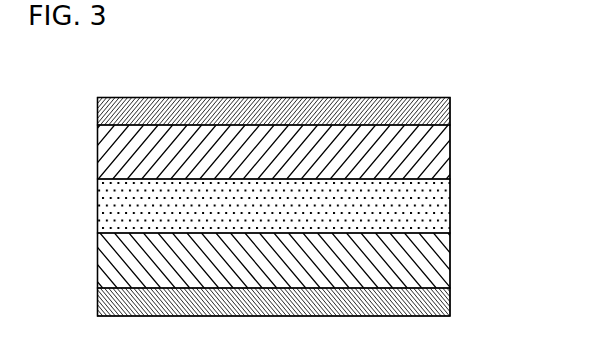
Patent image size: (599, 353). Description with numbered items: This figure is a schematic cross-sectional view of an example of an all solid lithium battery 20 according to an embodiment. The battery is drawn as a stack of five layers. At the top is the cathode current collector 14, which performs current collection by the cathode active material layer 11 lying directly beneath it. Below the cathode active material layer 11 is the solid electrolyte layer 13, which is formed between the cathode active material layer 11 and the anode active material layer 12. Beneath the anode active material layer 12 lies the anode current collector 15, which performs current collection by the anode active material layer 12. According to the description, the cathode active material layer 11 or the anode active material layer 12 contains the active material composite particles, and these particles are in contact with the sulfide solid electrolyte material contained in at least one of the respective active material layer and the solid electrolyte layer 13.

The all solid lithium battery 20 is at (431, 61).
The cathode current collector 14 is at (450, 102).
The cathode active material layer 11 is at (440, 147).
The solid electrolyte layer 13 is at (437, 203).
The anode active material layer 12 is at (437, 257).
The anode current collector 15 is at (450, 297).